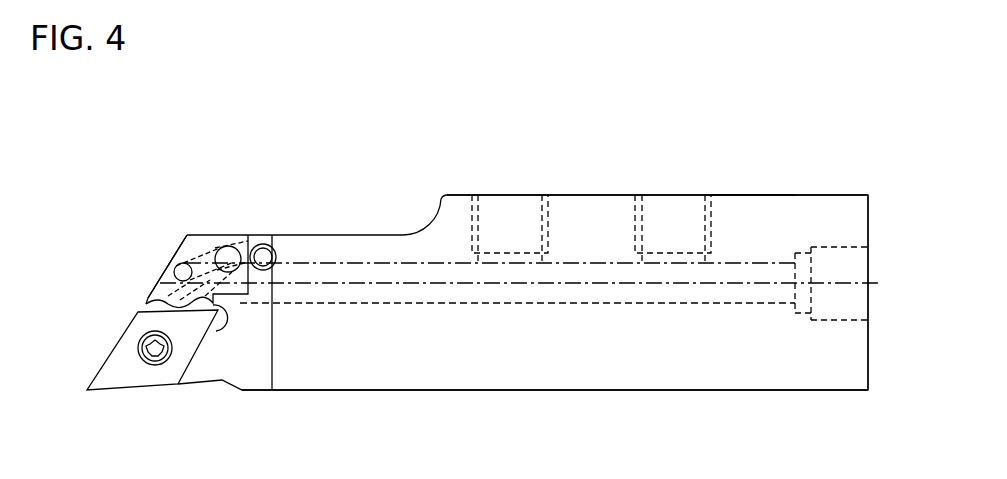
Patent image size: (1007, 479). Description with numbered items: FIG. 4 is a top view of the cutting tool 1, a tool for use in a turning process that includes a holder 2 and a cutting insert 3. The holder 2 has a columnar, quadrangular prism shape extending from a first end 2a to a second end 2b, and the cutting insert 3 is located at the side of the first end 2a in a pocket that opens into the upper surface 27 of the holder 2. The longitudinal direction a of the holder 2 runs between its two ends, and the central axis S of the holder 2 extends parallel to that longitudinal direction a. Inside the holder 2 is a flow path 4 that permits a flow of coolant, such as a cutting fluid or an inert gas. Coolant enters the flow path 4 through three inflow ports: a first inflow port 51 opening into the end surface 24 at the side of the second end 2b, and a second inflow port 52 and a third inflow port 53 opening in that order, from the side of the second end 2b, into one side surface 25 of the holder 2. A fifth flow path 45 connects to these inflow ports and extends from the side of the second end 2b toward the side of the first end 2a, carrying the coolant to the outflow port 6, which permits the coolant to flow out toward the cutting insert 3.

The cutting tool 1 is at (868, 134).
The holder 2 is at (205, 232).
The first end 2a is at (166, 262).
The second end 2b is at (870, 367).
The cutting insert 3 is at (114, 393).
The flow path 4 is at (587, 306).
The outflow port 6 is at (148, 306).
The end surface 24 is at (870, 221).
The side surface 25 is at (752, 194).
The upper surface 27 is at (321, 370).
The fifth flow path 45 is at (426, 305).
The first inflow port 51 is at (830, 245).
The second inflow port 52 is at (672, 194).
The third inflow port 53 is at (510, 194).
The central axis S is at (343, 280).
The longitudinal direction a is at (688, 423).